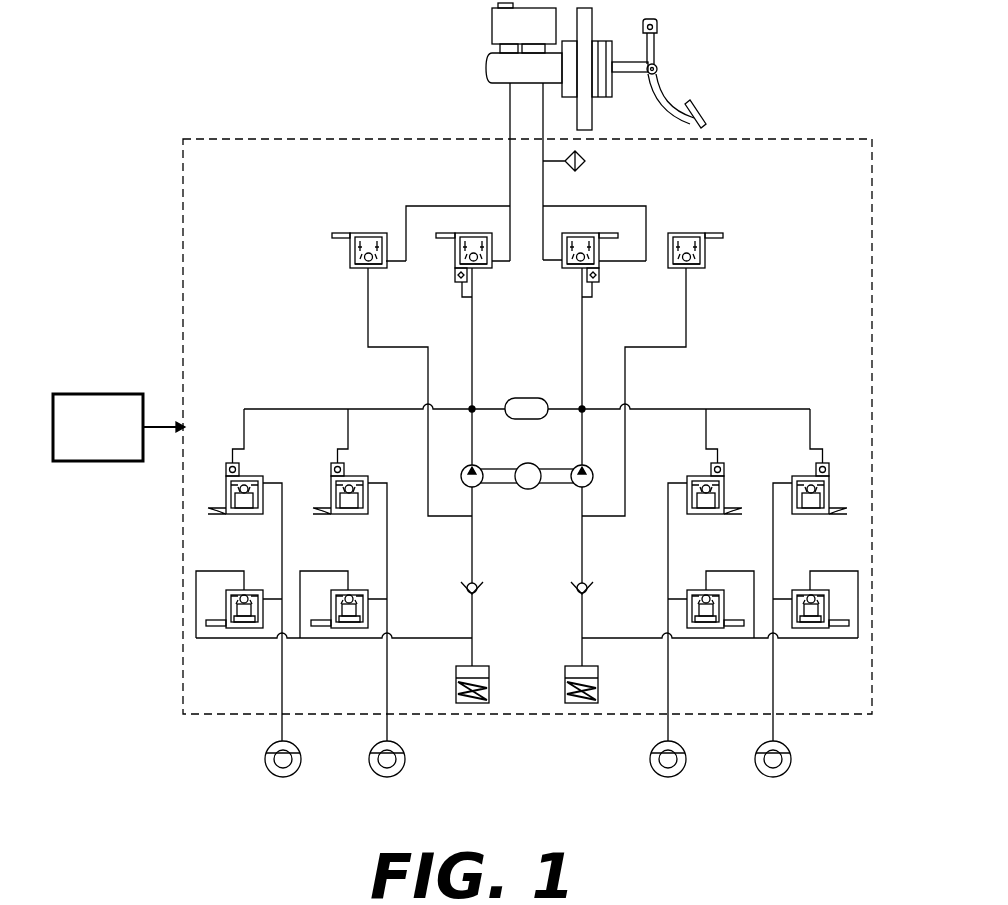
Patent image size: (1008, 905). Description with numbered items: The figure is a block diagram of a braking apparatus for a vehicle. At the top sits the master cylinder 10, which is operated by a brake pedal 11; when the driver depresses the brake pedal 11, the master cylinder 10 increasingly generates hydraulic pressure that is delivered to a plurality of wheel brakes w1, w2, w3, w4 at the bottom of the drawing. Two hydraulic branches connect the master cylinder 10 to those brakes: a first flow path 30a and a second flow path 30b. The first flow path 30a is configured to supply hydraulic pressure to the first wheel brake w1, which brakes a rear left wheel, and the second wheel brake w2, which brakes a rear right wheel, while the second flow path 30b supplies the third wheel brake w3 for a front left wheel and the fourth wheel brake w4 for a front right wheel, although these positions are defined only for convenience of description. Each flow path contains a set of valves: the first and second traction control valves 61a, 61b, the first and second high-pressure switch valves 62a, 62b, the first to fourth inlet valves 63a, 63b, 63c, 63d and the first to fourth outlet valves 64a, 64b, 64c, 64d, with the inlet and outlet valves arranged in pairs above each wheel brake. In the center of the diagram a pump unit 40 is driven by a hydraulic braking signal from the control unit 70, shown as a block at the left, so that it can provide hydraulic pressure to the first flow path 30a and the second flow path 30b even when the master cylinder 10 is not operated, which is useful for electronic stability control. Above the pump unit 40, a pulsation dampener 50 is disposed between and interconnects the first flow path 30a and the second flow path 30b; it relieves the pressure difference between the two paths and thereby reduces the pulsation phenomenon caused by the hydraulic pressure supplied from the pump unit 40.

The master cylinder 10 is at (488, 68).
The brake pedal 11 is at (663, 86).
The first flow path 30a is at (458, 205).
The second flow path 30b is at (607, 205).
The pump unit 40 is at (532, 508).
The pulsation dampener 50 is at (525, 398).
The first traction control valve 61a is at (458, 282).
The second traction control valve 61b is at (567, 282).
The first high-pressure switch valve 62a is at (355, 270).
The second high-pressure switch valve 62b is at (700, 270).
The first inlet valve 63a is at (260, 475).
The second inlet valve 63b is at (364, 475).
The third inlet valve 63c is at (690, 475).
The fourth inlet valve 63d is at (795, 475).
The first outlet valve 64a is at (252, 590).
The second outlet valve 64b is at (357, 590).
The third outlet valve 64c is at (702, 590).
The fourth outlet valve 64d is at (807, 590).
The control unit 70 is at (97, 394).
The first wheel brake w1 is at (264, 760).
The second wheel brake w2 is at (406, 762).
The third wheel brake w3 is at (649, 760).
The fourth wheel brake w4 is at (792, 762).